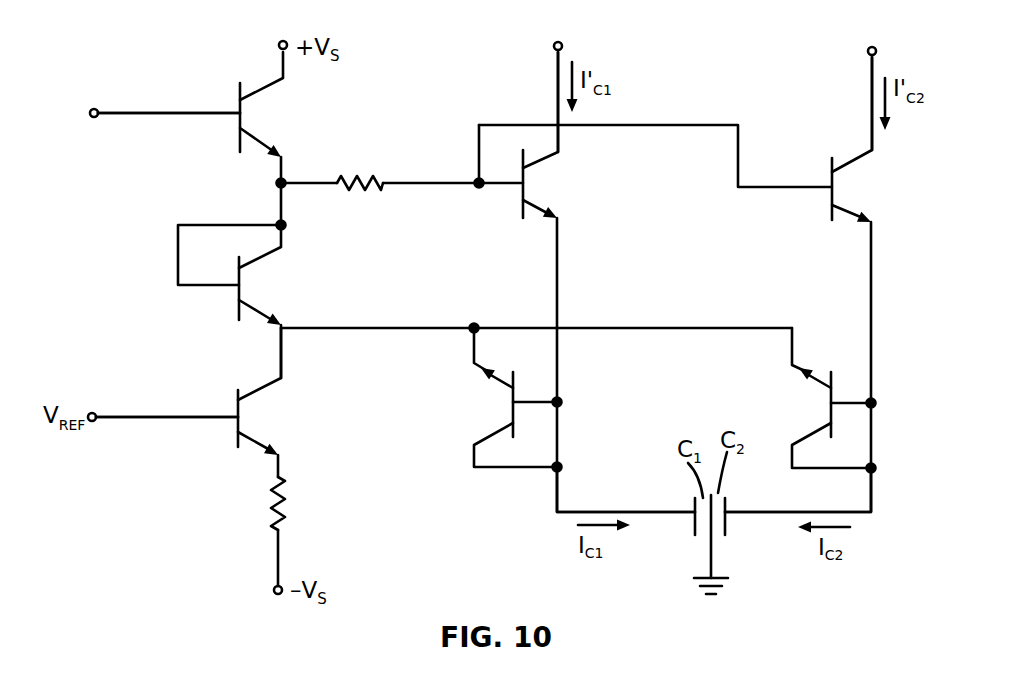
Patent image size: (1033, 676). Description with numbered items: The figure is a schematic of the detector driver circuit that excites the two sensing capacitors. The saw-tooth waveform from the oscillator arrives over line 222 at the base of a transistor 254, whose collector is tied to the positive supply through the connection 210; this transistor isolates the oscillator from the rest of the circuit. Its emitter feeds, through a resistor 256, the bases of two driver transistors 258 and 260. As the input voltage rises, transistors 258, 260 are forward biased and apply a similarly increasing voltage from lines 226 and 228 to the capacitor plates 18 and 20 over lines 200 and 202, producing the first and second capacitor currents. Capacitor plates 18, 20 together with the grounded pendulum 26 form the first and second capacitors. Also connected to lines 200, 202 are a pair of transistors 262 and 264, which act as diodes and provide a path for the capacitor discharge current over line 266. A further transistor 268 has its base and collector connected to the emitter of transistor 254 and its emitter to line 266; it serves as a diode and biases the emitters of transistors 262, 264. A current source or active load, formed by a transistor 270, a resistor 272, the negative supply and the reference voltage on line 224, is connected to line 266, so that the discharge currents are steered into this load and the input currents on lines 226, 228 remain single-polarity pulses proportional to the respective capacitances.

The positive supply terminal connection 210 is at (283, 61).
The line 222 is at (147, 115).
The transistor 254 is at (237, 128).
The resistor 256 is at (365, 178).
The transistor 268 is at (237, 292).
The line 266 is at (282, 357).
The line 224 is at (181, 415).
The transistor 270 is at (235, 428).
The resistor 272 is at (290, 500).
The line 226 is at (555, 66).
The transistor 258 is at (522, 198).
The line 228 is at (868, 73).
The transistor 260 is at (828, 194).
The transistor 262 is at (516, 392).
The transistor 264 is at (833, 393).
The line 200 is at (555, 490).
The line 202 is at (872, 488).
The capacitor plate 18 is at (695, 502).
The capacitor plate 20 is at (728, 503).
The pendulum 26 is at (713, 563).